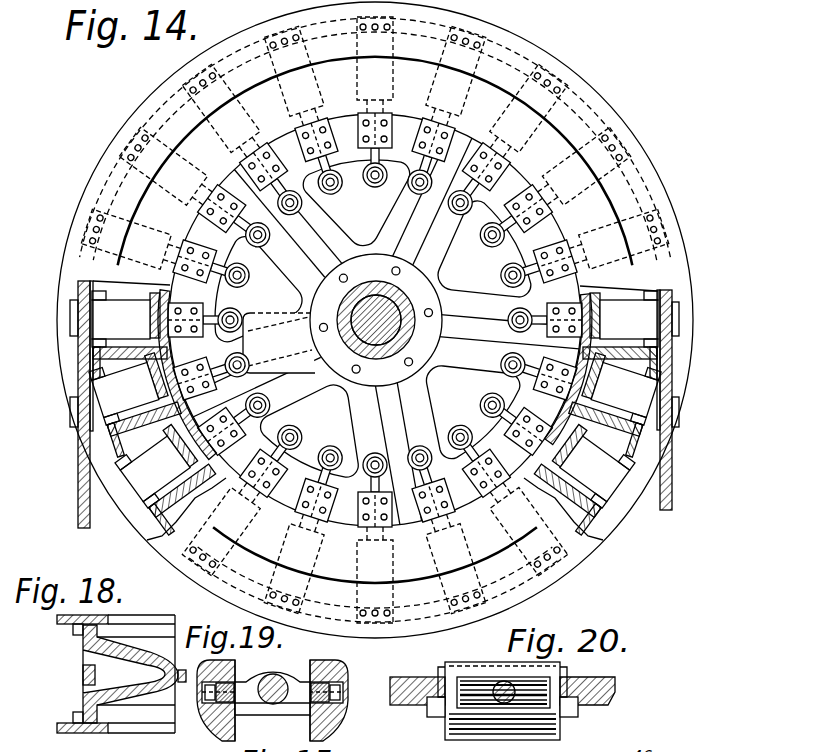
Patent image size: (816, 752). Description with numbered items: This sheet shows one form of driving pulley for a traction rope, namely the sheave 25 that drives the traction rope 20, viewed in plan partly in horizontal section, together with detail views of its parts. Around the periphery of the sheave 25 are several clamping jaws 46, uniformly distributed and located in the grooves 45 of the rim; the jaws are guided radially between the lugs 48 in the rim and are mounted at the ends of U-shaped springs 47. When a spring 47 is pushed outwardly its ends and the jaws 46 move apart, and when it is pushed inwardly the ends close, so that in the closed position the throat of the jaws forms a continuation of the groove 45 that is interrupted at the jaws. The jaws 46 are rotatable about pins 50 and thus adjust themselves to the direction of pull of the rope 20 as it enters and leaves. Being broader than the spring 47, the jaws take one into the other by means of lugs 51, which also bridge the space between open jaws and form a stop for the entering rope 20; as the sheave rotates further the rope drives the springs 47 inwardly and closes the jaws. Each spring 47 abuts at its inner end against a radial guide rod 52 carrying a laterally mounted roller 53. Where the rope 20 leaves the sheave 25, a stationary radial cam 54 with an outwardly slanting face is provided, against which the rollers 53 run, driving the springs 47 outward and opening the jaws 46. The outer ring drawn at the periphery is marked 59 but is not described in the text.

In FIG. 14, the traction rope 20 is at (78, 488).
In FIG. 19, the traction rope 20 is at (271, 704).
In FIG. 20, the traction rope 20 is at (615, 684).
In FIG. 14, the sheave 25 is at (585, 556).
In FIG. 18, the grooves 45 is at (83, 677).
In FIG. 14, the clamping jaws 46 is at (625, 505).
In FIG. 19, the clamping jaws 46 is at (309, 670).
In FIG. 20, the clamping jaws 46 is at (445, 668).
In FIG. 14, the U-shaped springs 47 is at (95, 413).
In FIG. 18, the U-shaped springs 47 is at (136, 694).
In FIG. 19, the U-shaped springs 47 is at (330, 730).
In FIG. 20, the U-shaped springs 47 is at (502, 707).
In FIG. 14, the lugs 48 is at (206, 501).
In FIG. 19, the pins 50 is at (345, 678).
In FIG. 20, the pins 50 is at (542, 713).
In FIG. 19, the lugs 51 is at (245, 704).
In FIG. 20, the lugs 51 is at (578, 708).
In FIG. 14, the radial guide rod 52 is at (264, 250).
In FIG. 14, the roller 53 is at (250, 279).
In FIG. 14, the radial cam 54 is at (262, 341).
In FIG. 14, the outer casing ring 59 is at (600, 93).